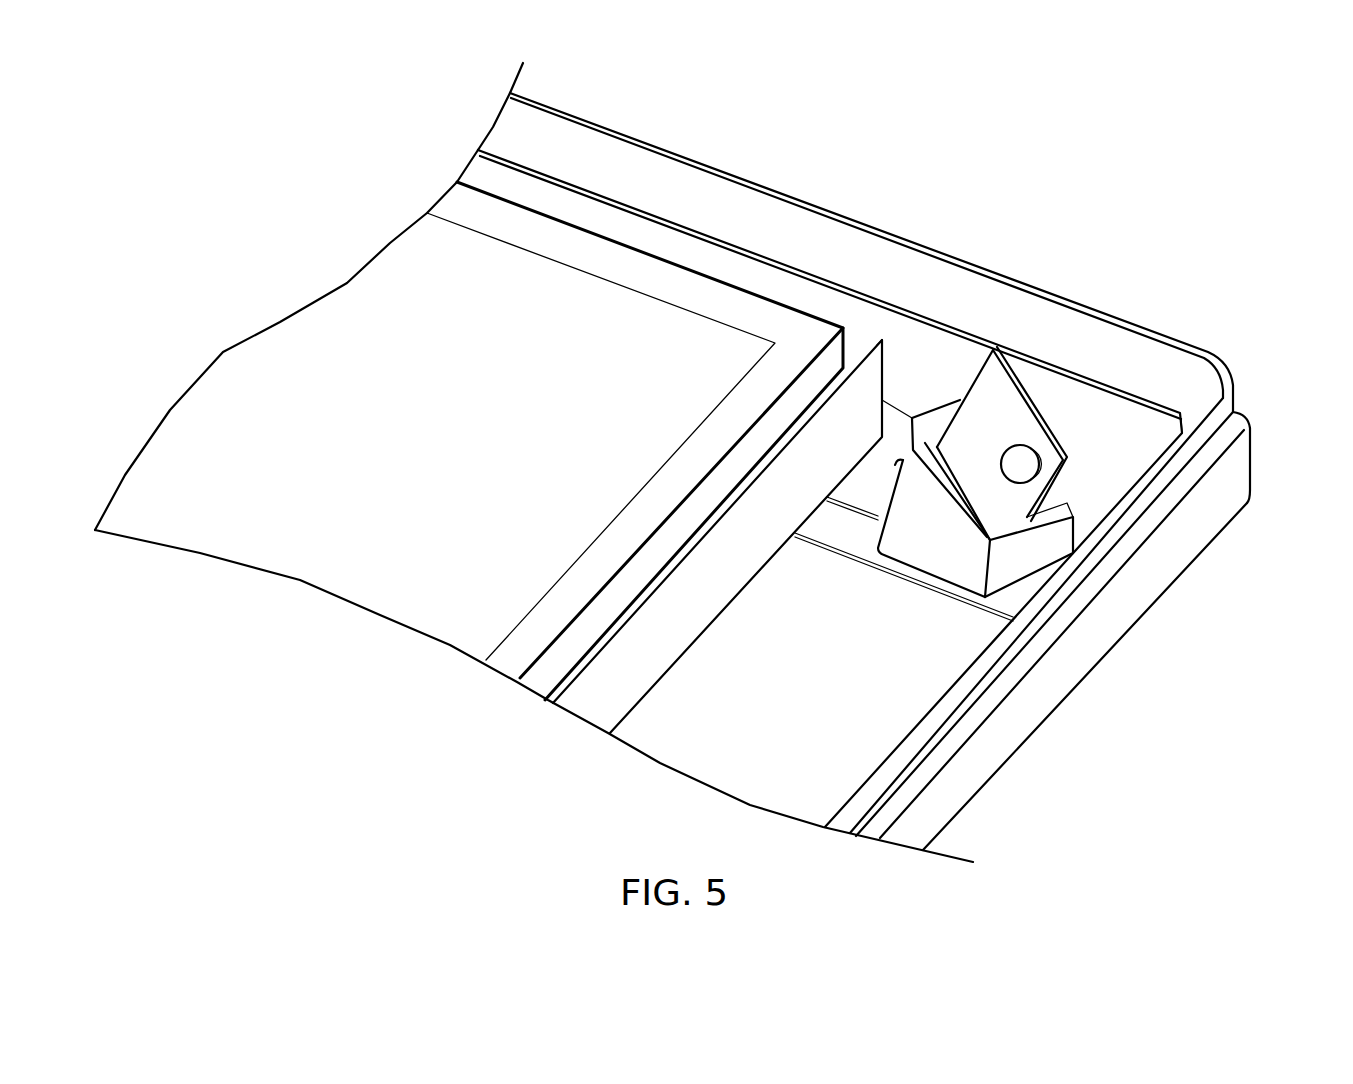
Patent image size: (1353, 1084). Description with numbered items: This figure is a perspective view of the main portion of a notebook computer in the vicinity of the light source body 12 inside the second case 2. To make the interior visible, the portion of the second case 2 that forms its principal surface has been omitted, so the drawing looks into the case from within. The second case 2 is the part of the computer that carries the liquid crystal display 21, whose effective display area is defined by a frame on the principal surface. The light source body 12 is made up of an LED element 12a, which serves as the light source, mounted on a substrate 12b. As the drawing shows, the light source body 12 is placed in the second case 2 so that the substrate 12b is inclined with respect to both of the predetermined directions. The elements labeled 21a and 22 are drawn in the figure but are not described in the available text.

The second case 2 is at (1250, 452).
The light source body 12 is at (1027, 407).
The LED element 12a is at (1020, 462).
The substrate 12b is at (997, 397).
The liquid crystal display 21 is at (712, 297).
The frame surface 21a is at (550, 300).
The base block 22 is at (1040, 560).